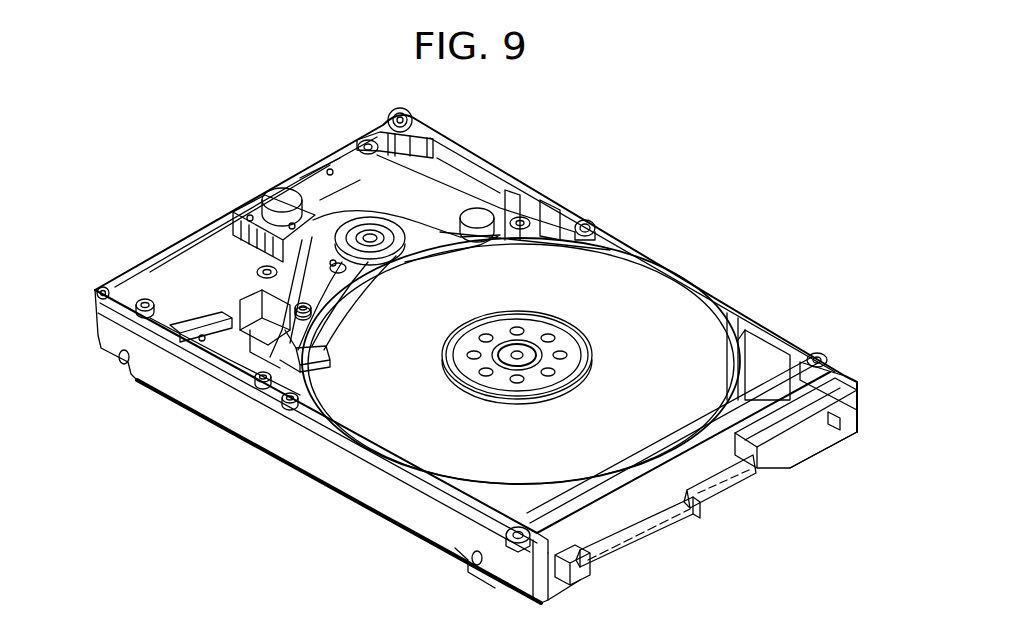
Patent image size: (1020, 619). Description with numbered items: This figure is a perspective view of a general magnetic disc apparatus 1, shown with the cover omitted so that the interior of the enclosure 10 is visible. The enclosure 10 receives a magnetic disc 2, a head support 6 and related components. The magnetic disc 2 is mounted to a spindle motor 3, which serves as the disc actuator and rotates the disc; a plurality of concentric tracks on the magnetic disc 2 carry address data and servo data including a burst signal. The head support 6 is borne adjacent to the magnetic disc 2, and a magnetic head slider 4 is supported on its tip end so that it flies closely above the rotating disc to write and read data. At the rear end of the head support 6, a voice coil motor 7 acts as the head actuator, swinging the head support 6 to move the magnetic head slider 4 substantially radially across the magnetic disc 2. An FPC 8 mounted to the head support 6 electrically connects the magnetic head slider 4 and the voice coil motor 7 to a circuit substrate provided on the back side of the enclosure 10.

The magnetic disc apparatus 1 is at (476, 355).
The magnetic disc 2 is at (683, 300).
The spindle motor 3 is at (533, 330).
The magnetic head slider 4 is at (316, 345).
The head support 6 is at (322, 287).
The voice coil motor 7 is at (352, 176).
The FPC 8 is at (255, 316).
The enclosure 10 is at (270, 426).